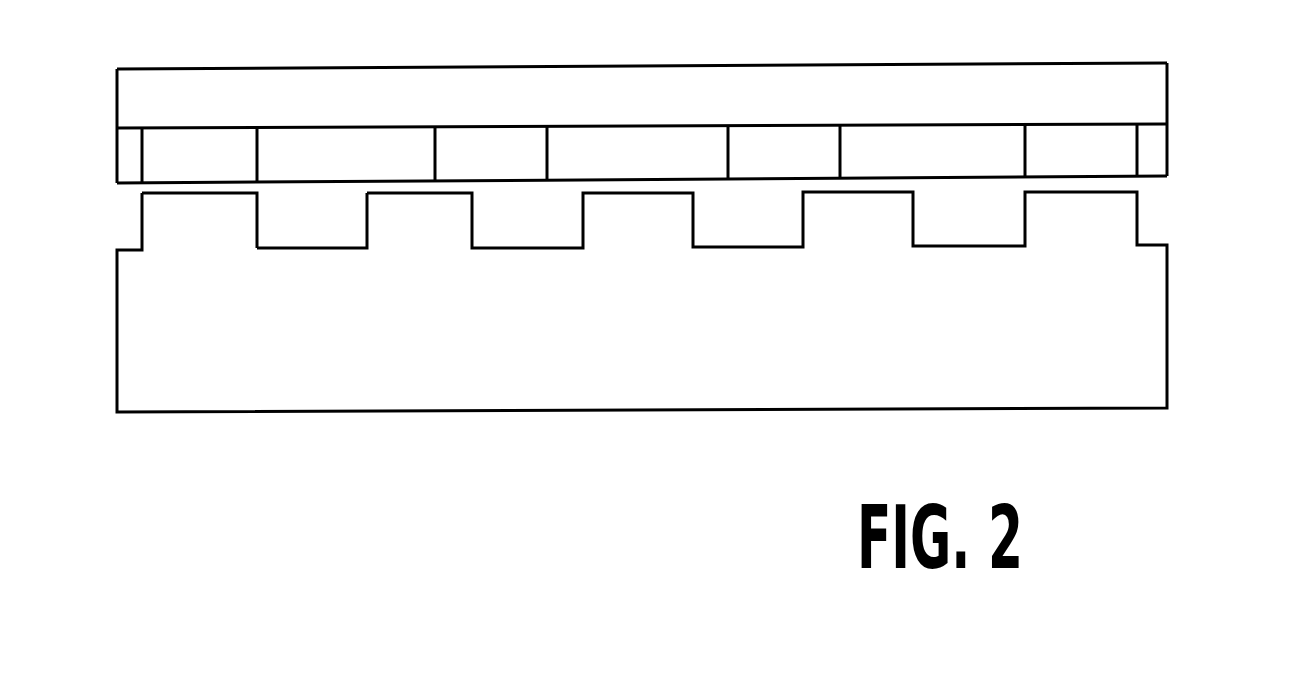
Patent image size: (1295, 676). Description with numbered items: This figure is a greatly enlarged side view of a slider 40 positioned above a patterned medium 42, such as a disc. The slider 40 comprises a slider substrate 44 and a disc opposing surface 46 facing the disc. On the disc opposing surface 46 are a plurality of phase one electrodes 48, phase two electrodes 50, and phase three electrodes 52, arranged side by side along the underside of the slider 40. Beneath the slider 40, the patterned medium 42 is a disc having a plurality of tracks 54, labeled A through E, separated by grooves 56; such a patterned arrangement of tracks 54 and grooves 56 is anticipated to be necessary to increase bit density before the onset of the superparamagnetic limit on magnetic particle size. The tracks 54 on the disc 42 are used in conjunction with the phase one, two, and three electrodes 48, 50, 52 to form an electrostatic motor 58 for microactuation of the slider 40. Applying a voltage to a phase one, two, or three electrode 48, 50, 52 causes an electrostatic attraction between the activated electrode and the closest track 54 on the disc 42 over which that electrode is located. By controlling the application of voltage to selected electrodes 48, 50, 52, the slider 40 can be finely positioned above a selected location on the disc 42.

The slider 40 is at (1182, 67).
The patterned medium 42 is at (1190, 294).
The slider substrate 44 is at (121, 80).
The disc opposing surface 46 is at (106, 198).
The phase 1 electrodes 48 is at (165, 142).
The phase 2 electrodes 50 is at (525, 137).
The phase 3 electrodes 52 is at (800, 135).
The tracks 54 is at (237, 210).
The grooves 56 is at (283, 236).
The electrostatic motor 58 is at (1180, 170).